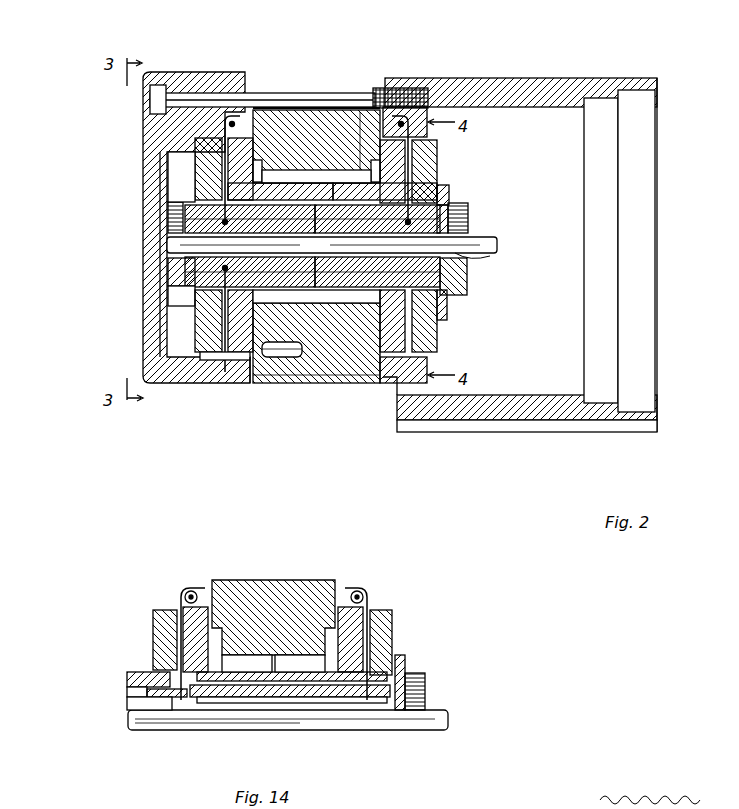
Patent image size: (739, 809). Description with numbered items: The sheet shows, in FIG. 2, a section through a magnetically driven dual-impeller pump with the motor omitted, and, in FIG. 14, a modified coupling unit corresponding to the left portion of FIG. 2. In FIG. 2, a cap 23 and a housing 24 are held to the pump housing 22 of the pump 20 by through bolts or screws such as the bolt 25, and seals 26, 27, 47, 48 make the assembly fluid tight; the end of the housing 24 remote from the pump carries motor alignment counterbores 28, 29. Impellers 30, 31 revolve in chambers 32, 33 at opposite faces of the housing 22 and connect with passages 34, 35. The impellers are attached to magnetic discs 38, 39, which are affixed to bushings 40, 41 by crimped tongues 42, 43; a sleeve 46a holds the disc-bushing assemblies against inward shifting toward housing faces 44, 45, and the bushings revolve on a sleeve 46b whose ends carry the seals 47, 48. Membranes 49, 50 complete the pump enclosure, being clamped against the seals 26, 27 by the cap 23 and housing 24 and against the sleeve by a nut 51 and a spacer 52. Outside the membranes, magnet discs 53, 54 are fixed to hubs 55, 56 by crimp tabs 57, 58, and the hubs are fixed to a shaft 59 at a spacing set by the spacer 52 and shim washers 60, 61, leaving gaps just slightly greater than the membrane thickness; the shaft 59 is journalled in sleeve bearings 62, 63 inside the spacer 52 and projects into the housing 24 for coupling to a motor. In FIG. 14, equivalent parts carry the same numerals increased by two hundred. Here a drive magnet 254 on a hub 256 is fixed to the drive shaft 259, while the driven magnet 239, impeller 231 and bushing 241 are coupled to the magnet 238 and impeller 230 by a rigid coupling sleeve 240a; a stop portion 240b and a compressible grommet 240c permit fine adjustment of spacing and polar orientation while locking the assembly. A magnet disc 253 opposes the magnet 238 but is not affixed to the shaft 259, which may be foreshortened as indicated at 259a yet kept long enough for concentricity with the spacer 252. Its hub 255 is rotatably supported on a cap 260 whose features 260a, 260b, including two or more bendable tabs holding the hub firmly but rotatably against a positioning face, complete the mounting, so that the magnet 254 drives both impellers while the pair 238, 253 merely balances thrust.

In FIG. 2, the pump 20 is at (336, 86).
In FIG. 2, the pump housing 22 is at (267, 110).
In FIG. 2, the cap 23 is at (197, 73).
In FIG. 2, the housing 24 is at (520, 80).
In FIG. 2, the through bolt 25 is at (250, 97).
In FIG. 2, the seal 26 is at (218, 385).
In FIG. 2, the seal 27 is at (395, 385).
In FIG. 2, the counterbore 28 is at (605, 100).
In FIG. 2, the counterbore 29 is at (650, 95).
In FIG. 2, the impeller 30 is at (248, 385).
In FIG. 2, the impeller 31 is at (352, 362).
In FIG. 2, the chamber 32 is at (263, 165).
In FIG. 2, the chamber 33 is at (372, 166).
In FIG. 2, the passage 34 is at (275, 385).
In FIG. 2, the passage 35 is at (330, 400).
In FIG. 2, the magnetic disc 38 is at (280, 190).
In FIG. 2, the magnetic disc 39 is at (381, 190).
In FIG. 2, the bushing 40 is at (316, 338).
In FIG. 2, the bushing 41 is at (316, 301).
In FIG. 2, the crimped tongue 42 is at (222, 300).
In FIG. 2, the crimped tongue 43 is at (440, 312).
In FIG. 2, the housing face 44 is at (266, 137).
In FIG. 2, the housing face 45 is at (362, 138).
In FIG. 2, the sleeve 46a is at (345, 190).
In FIG. 2, the sleeve 46b is at (420, 180).
In FIG. 2, the seal 47 is at (300, 228).
In FIG. 2, the seal 48 is at (386, 228).
In FIG. 2, the membrane 49 is at (205, 164).
In FIG. 2, the membrane 50 is at (422, 162).
In FIG. 2, the nut 51 is at (200, 285).
In FIG. 2, the spacer 52 is at (452, 206).
In FIG. 2, the magnet disc 53 is at (180, 190).
In FIG. 2, the magnet disc 54 is at (443, 192).
In FIG. 2, the hub 55 is at (200, 300).
In FIG. 2, the hub 56 is at (467, 280).
In FIG. 2, the crimp tab 57 is at (200, 315).
In FIG. 2, the crimp tab 58 is at (442, 300).
In FIG. 2, the shaft 59 is at (490, 238).
In FIG. 2, the shim washer 60 is at (165, 218).
In FIG. 2, the shim washer 61 is at (470, 215).
In FIG. 2, the sleeve bearing 62 is at (180, 268).
In FIG. 2, the sleeve bearing 63 is at (468, 257).
In FIG. 14, the impeller 230 is at (247, 663).
In FIG. 14, the impeller 231 is at (362, 595).
In FIG. 14, the magnet 238 is at (200, 630).
In FIG. 14, the driven magnet 239 is at (372, 615).
In FIG. 14, the rigid coupling sleeve 240a is at (265, 675).
In FIG. 14, the stop portion 240b is at (290, 705).
In FIG. 14, the compressible grommet 240c is at (245, 700).
In FIG. 14, the bushing 241 is at (303, 663).
In FIG. 14, the spacer 252 is at (400, 690).
In FIG. 14, the magnet disc 253 is at (165, 625).
In FIG. 14, the drive magnet 254 is at (392, 640).
In FIG. 14, the hub 255 is at (125, 672).
In FIG. 14, the hub 256 is at (425, 700).
In FIG. 14, the drive shaft 259 is at (420, 722).
In FIG. 14, the foreshortening 259a is at (140, 732).
In FIG. 14, the cap 260 is at (130, 712).
In FIG. 14, the clip portion 260a is at (125, 696).
In FIG. 14, the bendable tab 260b is at (128, 706).